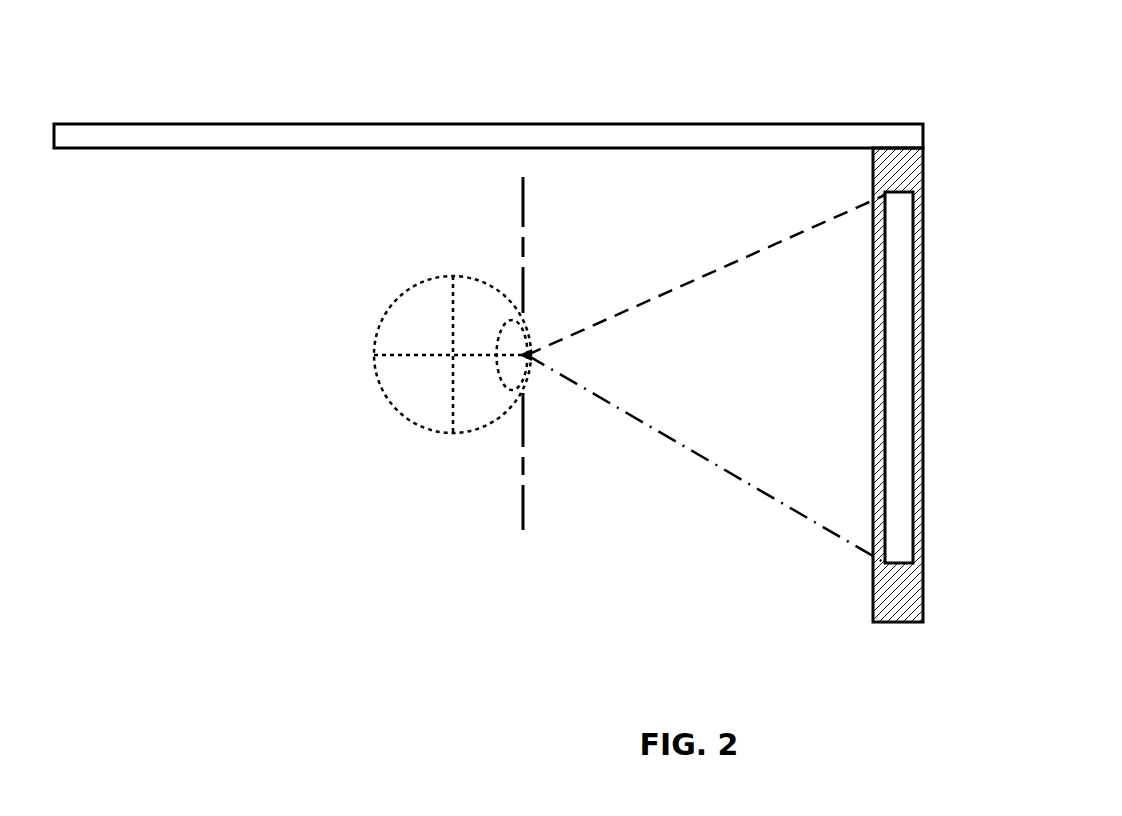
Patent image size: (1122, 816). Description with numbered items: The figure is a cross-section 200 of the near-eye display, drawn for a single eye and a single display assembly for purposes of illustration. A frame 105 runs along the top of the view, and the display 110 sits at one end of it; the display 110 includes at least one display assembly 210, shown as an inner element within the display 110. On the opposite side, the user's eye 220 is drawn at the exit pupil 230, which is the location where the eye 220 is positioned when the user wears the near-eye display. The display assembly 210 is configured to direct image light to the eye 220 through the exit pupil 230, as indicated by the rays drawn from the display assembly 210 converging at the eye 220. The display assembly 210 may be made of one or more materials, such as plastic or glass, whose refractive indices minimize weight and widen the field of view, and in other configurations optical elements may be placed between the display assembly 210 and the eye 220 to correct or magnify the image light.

The cross-section 200 is at (188, 26).
The frame 105 is at (778, 123).
The display 110 is at (923, 499).
The display assembly 210 is at (893, 265).
The eye 220 is at (413, 288).
The exit pupil 230 is at (518, 452).